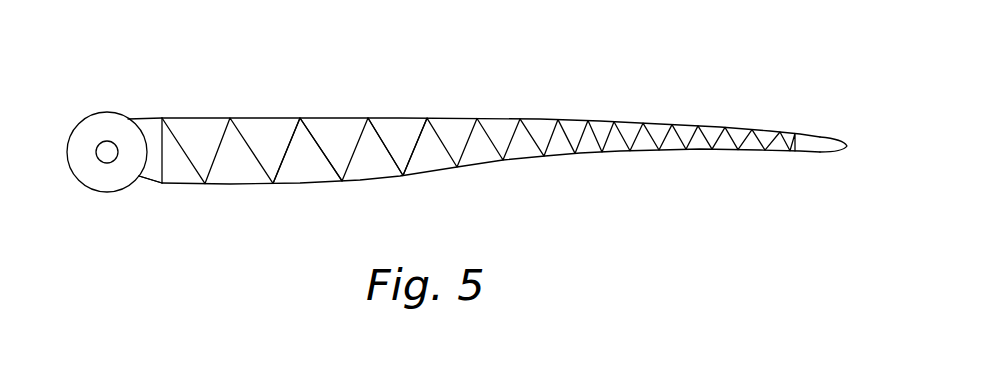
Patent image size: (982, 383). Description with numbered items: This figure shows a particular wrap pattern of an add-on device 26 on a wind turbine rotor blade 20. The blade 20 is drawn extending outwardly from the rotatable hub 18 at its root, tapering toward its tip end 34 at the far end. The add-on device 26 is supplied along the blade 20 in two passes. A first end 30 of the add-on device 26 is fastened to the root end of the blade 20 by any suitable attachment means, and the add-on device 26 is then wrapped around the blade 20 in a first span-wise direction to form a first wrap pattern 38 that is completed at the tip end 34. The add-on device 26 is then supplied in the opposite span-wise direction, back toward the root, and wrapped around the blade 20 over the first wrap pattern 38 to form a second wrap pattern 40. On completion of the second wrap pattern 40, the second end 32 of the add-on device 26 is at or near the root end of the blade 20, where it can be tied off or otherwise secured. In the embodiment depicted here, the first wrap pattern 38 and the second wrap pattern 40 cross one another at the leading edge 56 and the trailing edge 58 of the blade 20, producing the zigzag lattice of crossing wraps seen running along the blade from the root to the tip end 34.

The hub 18 is at (97, 113).
The rotor blade 20 is at (740, 86).
The add-on device 26 is at (538, 140).
The first end of the add-on device 30 is at (163, 183).
The second end of the add-on device 32 is at (163, 118).
The tip end 34 is at (838, 152).
The first wrap pattern 38 is at (282, 140).
The second wrap pattern 40 is at (392, 142).
The leading edge 56 is at (335, 118).
The trailing edge 58 is at (562, 157).